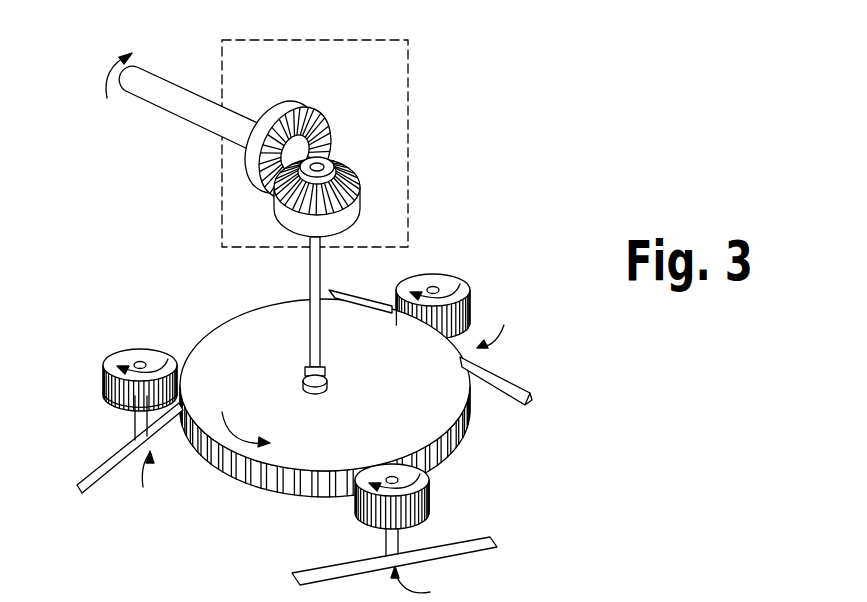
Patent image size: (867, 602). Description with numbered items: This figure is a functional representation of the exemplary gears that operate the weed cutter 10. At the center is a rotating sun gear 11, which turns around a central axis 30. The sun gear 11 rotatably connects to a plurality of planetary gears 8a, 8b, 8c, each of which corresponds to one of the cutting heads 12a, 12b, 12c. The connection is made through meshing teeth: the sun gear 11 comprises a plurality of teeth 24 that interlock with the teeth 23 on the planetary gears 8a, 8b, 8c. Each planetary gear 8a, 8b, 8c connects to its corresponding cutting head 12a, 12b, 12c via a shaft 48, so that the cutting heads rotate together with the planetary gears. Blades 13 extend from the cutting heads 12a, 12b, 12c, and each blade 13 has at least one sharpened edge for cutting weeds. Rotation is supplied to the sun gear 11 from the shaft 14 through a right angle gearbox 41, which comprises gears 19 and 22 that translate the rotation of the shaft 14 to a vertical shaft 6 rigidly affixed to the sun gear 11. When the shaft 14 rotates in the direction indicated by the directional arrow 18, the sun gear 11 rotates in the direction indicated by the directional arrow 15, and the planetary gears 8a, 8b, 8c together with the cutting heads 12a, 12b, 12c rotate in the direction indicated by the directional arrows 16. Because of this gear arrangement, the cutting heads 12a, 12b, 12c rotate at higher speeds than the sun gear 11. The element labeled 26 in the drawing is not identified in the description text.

The vertical shaft 6 is at (312, 290).
The planetary gear 8a is at (125, 358).
The planetary gear 8b is at (377, 477).
The planetary gear 8c is at (430, 285).
The weed cutter 10 is at (533, 128).
The sun gear 11 is at (426, 391).
The cutting head 12a is at (130, 479).
The cutting head 12b is at (428, 584).
The cutting head 12c is at (510, 331).
The blade 13 is at (362, 298).
The shaft 14 is at (165, 95).
The directional arrow 15 is at (222, 412).
The directional arrow 16 is at (153, 352).
The directional arrow 18 is at (130, 53).
The gear 19 is at (285, 115).
The gear 22 is at (352, 174).
The teeth 23 is at (118, 407).
The teeth 24 is at (225, 472).
The ring gear 26 is at (470, 415).
The central axis 30 is at (323, 388).
The right angle gearbox 41 is at (367, 39).
The shaft 48 is at (140, 429).